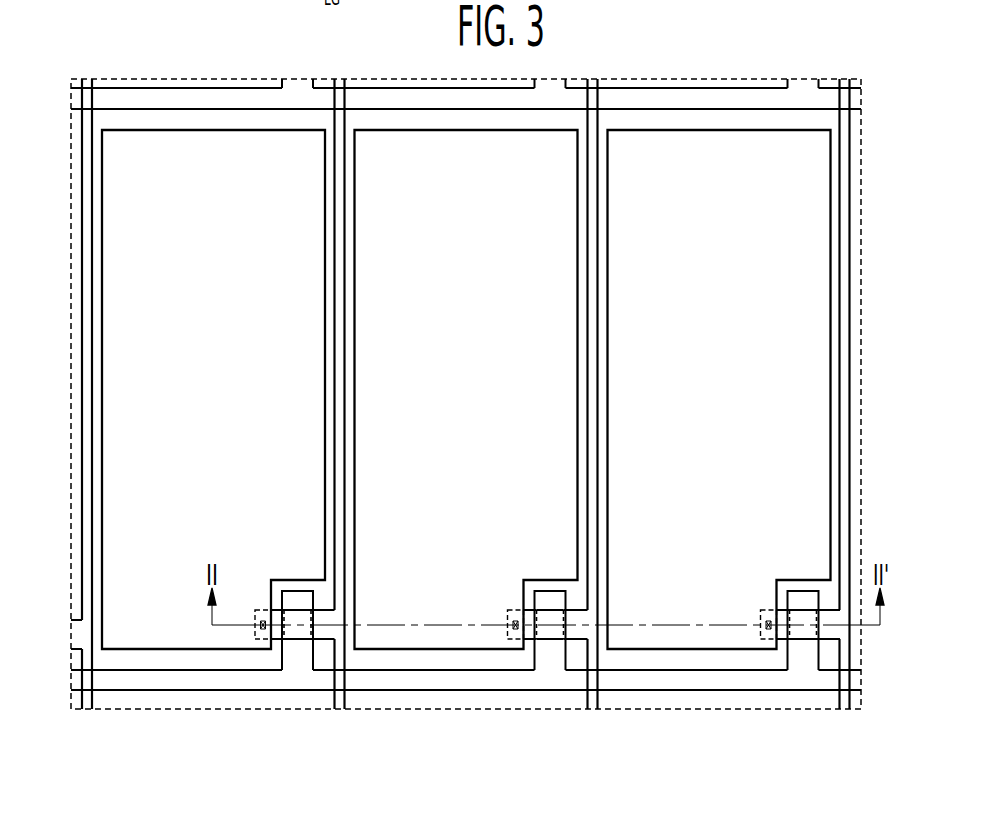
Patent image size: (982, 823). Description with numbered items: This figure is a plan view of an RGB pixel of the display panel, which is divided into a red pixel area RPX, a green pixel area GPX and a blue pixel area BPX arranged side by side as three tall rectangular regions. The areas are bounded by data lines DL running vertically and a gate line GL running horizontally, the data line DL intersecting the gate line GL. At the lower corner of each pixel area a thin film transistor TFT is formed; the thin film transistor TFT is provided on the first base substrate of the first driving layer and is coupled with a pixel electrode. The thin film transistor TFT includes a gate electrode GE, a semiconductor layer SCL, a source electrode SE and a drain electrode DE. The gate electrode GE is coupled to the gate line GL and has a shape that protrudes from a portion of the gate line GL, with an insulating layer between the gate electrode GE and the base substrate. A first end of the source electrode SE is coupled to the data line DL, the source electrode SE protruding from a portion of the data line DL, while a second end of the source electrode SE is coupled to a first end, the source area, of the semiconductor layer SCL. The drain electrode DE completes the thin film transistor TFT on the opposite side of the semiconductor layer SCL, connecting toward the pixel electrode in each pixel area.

The data line DL is at (85, 593).
The gate line GL is at (173, 684).
The red pixel area RPX is at (213, 389).
The green pixel area GPX is at (466, 389).
The blue pixel area BPX is at (719, 389).
The thin film transistor TFT is at (552, 700).
The drain electrode DE is at (517, 637).
The gate electrode GE is at (545, 598).
The semiconductor layer SCL is at (548, 635).
The source electrode SE is at (578, 637).